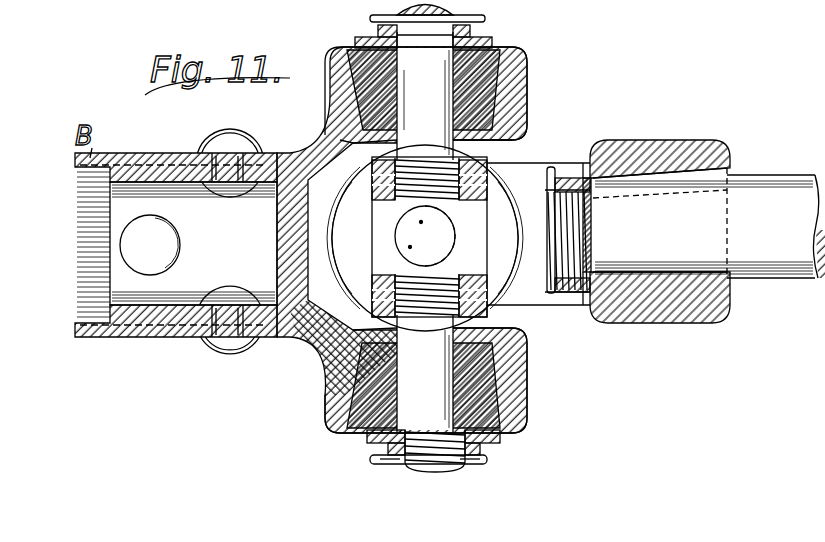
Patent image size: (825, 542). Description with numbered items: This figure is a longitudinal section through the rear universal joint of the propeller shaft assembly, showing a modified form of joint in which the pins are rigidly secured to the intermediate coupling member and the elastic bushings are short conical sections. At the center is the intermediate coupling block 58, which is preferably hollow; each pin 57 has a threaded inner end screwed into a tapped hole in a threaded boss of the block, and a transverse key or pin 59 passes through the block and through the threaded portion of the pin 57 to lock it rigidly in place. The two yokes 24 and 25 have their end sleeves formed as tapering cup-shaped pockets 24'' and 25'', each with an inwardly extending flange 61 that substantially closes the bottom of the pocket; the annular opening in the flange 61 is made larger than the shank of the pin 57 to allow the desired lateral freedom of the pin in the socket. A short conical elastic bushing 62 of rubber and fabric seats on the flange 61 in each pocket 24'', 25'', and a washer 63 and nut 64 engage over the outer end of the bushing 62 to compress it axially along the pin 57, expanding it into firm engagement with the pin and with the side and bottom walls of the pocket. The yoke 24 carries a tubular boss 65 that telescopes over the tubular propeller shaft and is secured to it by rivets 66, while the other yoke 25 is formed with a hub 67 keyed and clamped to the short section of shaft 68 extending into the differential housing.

The yoke 24 is at (394, 240).
The tapering cup-shaped pocket 24'' is at (462, 240).
The yoke 25 is at (538, 216).
The tapering cup-shaped pocket 25'' is at (424, 282).
The pin 57 is at (490, 47).
The intermediate coupling block 58 is at (398, 200).
The transverse key or pin 59 is at (488, 177).
The inwardly extending flange 61 is at (513, 128).
The elastic bushing 62 is at (510, 90).
The washer 63 is at (488, 36).
The nut 64 is at (378, 18).
The tubular boss 65 is at (112, 305).
The rivet 66 is at (231, 187).
The hub 67 is at (655, 142).
The shaft 68 is at (780, 172).